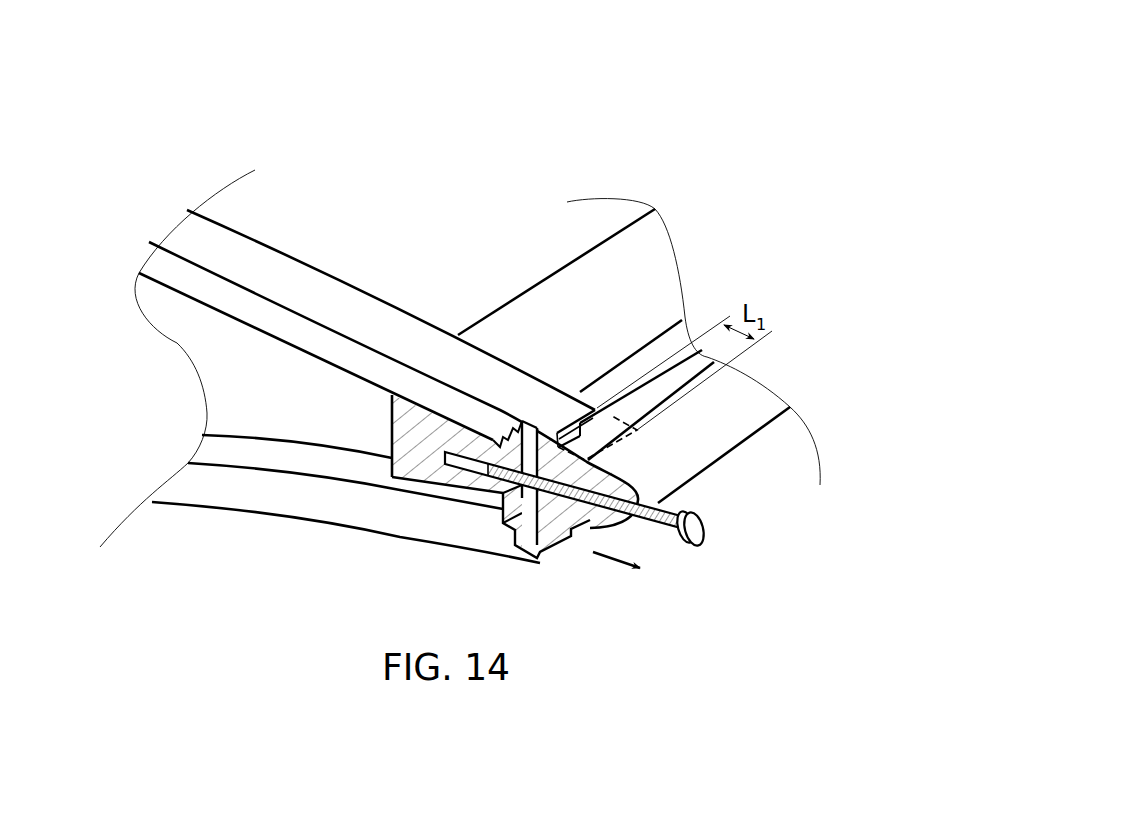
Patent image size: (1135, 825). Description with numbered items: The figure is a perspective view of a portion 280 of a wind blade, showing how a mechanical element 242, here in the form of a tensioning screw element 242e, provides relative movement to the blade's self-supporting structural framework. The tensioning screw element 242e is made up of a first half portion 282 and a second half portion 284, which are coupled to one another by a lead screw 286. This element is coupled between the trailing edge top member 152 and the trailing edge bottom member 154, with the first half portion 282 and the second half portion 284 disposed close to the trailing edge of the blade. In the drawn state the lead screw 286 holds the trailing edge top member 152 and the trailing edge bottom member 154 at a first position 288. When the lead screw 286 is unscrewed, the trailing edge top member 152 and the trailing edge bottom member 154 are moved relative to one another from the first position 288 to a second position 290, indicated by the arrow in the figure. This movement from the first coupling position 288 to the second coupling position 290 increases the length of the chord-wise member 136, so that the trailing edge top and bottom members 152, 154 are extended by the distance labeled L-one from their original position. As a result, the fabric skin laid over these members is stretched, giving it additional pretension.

The portion of the wind blade 280 is at (700, 92).
The chord-wise member 136 is at (322, 252).
The trailing edge top member 152 is at (282, 325).
The trailing edge bottom member 154 is at (228, 495).
The first half portion 282 is at (392, 478).
The second half portion 284 is at (540, 548).
The first position 288 is at (540, 424).
The second position 290 is at (637, 435).
The mechanical element 242 is at (670, 542).
The tensioning screw element 242e is at (697, 530).
The lead screw 286 is at (697, 494).